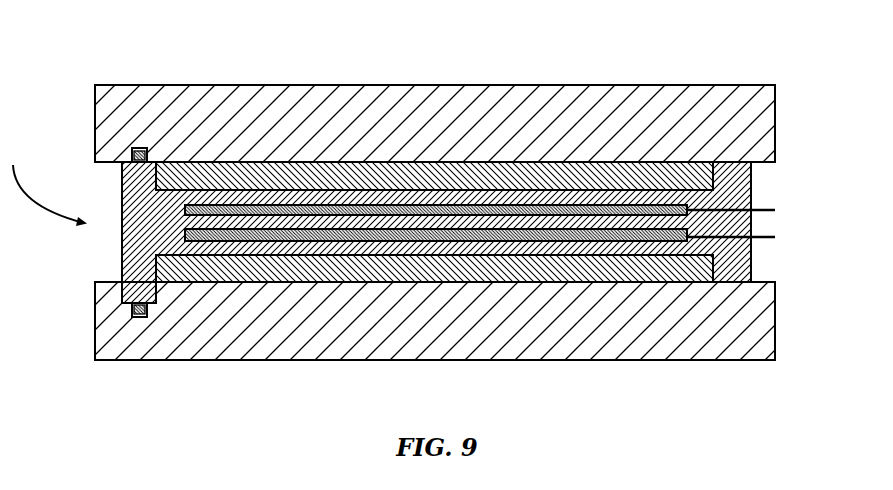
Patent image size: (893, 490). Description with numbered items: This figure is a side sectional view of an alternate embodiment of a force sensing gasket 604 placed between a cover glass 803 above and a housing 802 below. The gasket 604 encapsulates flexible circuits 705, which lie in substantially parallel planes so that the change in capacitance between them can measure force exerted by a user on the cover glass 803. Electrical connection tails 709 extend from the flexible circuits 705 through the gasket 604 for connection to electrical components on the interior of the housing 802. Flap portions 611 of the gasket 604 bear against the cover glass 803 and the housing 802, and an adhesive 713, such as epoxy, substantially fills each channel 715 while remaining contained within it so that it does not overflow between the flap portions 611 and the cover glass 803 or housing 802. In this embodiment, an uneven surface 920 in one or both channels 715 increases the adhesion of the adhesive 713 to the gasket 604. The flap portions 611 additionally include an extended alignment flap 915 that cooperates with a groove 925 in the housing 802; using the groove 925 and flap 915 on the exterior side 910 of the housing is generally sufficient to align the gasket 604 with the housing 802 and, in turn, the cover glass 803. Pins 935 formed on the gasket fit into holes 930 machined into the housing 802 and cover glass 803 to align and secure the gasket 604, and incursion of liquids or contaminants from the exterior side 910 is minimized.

The gasket 604 is at (825, 163).
The flap portions 611 is at (120, 179).
The flexible circuits 705 is at (263, 207).
The electrical connection tails 709 is at (770, 221).
The adhesive 713 is at (327, 172).
The channel 715 is at (627, 162).
The housing 802 is at (556, 361).
The cover glass 803 is at (558, 85).
The exterior side 910 is at (42, 207).
The extended alignment flaps 915 is at (135, 283).
The uneven surface 920 is at (714, 161).
The grooves 925 is at (120, 290).
The holes 930 is at (136, 148).
The pins 935 is at (131, 152).